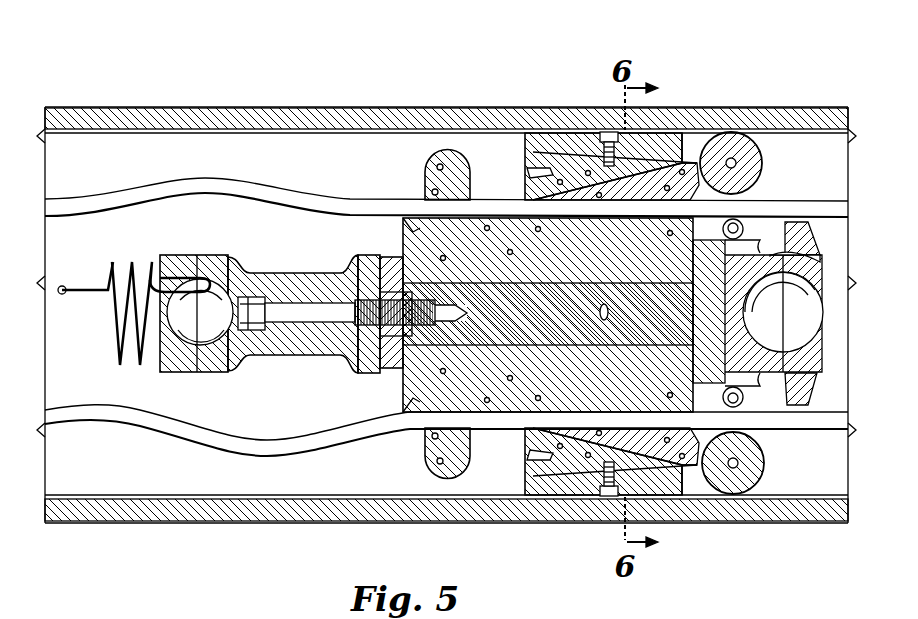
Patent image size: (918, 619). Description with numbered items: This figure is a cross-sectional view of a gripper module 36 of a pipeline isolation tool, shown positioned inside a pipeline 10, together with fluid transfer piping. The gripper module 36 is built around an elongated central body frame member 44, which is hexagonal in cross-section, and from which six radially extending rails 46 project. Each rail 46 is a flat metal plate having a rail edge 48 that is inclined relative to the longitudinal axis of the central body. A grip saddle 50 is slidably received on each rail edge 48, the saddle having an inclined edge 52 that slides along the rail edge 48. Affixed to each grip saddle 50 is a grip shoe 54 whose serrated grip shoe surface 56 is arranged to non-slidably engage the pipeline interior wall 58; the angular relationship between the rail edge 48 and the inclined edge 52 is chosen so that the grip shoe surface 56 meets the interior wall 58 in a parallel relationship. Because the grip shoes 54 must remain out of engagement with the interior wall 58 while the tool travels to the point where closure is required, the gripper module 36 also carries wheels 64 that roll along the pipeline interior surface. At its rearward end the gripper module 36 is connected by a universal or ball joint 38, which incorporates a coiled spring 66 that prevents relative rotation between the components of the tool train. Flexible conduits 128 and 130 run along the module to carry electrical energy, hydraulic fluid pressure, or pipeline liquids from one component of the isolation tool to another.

The pipeline 10 is at (334, 107).
The gripper module 36 is at (419, 98).
The universal joint 38 is at (297, 268).
The central body frame member 44 is at (548, 314).
The radially extending rails 46 is at (548, 266).
The rail edge 48 is at (659, 128).
The grip saddle 50 is at (572, 163).
The inclined edge 52 is at (612, 182).
The grip shoe 54 is at (547, 130).
The grip shoe surface 56 is at (590, 130).
The pipeline interior wall 58 is at (178, 154).
The wheels 64 is at (763, 160).
The coiled spring 66 is at (113, 262).
The flexible conduit 128 is at (230, 188).
The flexible conduit 130 is at (162, 430).